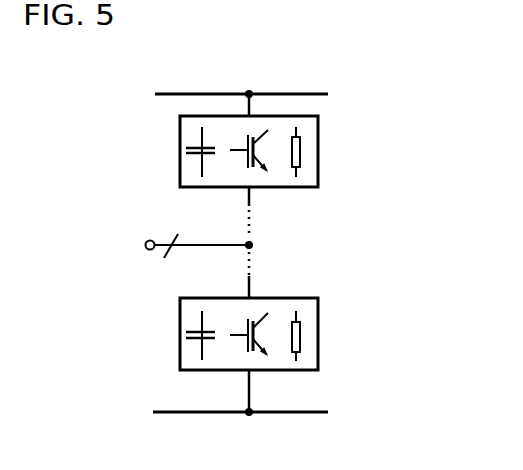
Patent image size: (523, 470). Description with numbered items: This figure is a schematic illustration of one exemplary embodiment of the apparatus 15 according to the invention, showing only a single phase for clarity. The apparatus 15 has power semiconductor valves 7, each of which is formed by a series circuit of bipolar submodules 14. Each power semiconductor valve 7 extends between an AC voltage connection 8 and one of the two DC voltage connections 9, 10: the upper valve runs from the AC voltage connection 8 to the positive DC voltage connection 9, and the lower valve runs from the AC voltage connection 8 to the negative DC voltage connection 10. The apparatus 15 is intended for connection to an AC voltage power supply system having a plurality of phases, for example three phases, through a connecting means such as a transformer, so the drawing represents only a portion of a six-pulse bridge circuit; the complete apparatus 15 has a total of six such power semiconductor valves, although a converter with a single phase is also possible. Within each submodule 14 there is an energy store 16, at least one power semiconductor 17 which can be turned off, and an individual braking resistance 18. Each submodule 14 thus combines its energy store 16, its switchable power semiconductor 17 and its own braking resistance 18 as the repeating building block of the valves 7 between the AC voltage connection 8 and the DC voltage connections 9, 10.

The power semiconductor valve 7 is at (273, 256).
The AC voltage connection 8 is at (249, 245).
The DC voltage connection 9 is at (190, 94).
The DC voltage connection 10 is at (162, 412).
The bipolar submodule 14 is at (318, 172).
The apparatus 15 is at (387, 73).
The energy store 16 is at (192, 149).
The power semiconductor 17 is at (245, 158).
The braking resistance 18 is at (300, 142).